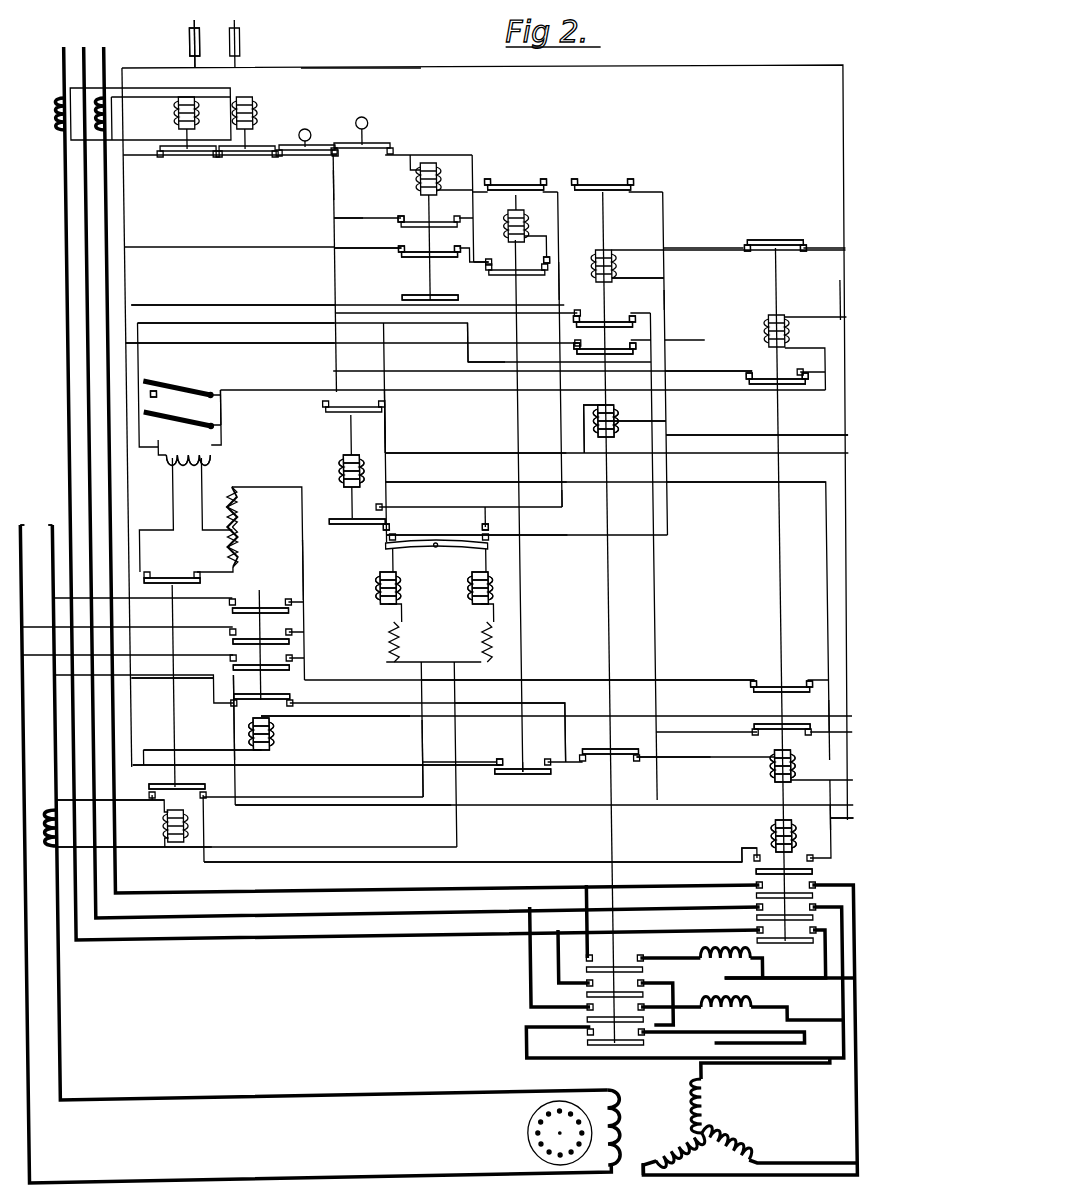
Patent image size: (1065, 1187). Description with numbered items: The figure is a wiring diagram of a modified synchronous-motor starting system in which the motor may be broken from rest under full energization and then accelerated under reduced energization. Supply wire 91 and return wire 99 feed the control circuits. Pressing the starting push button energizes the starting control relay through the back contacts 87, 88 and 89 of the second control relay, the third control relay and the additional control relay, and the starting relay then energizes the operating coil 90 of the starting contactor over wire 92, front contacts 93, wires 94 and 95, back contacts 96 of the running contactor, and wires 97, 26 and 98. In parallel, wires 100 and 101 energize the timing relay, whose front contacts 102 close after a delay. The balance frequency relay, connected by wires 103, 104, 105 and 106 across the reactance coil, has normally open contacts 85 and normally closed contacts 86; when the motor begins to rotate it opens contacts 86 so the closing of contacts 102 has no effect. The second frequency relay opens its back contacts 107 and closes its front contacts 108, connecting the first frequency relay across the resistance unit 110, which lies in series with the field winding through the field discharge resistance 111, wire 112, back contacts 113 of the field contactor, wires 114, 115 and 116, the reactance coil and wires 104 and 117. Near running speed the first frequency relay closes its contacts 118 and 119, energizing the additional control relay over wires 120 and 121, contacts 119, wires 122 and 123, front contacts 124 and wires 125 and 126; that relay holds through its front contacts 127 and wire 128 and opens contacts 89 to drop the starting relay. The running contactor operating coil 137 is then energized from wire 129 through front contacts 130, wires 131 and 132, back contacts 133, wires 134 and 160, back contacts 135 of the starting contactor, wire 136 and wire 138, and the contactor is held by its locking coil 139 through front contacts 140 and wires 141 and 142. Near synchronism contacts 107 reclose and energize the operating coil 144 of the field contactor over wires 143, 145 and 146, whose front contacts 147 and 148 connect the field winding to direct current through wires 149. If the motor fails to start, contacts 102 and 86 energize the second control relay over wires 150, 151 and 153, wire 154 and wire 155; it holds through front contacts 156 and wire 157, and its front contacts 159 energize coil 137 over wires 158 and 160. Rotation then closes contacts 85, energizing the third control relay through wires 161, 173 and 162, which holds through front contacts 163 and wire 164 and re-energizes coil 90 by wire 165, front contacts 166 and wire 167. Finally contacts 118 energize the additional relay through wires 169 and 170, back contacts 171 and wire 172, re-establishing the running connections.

The wire 26 is at (578, 425).
The contacts of balance frequency relay 85 is at (483, 528).
The contacts of balance frequency relay 86 is at (400, 530).
The back contacts of control relay CR2' 87 is at (514, 186).
The back contacts of control relay CR3' 88 is at (598, 185).
The back contacts of control relay CR4 89 is at (770, 241).
The operating coil of starting contactor 90 is at (608, 420).
The wire 91 is at (164, 68).
The wire 92 is at (209, 247).
The front contacts of relay CR1' 93 is at (420, 262).
The wire 94 is at (468, 355).
The wire 95 is at (660, 418).
The back contacts of running contactor 96 is at (755, 733).
The wire 97 is at (712, 482).
The wire 98 is at (737, 433).
The wire 99 is at (328, 68).
The wire 100 is at (436, 482).
The wire 101 is at (446, 455).
The front contacts of timing relay 102 is at (333, 500).
The wire 103 is at (412, 743).
The wire 104 is at (134, 803).
The wire 105 is at (134, 848).
The wire 106 is at (324, 822).
The back contacts of relay FR2' 107 is at (177, 778).
The front contacts of relay FR2' 108 is at (172, 567).
The resistance unit 110 is at (236, 530).
The field discharge resistance 111 is at (235, 503).
The wire 112 is at (295, 557).
The back contacts of field contactor 113 is at (290, 675).
The wire 114 is at (150, 680).
The wire 115 is at (13, 975).
The wire 116 is at (252, 1093).
The wire 117 is at (215, 716).
The contacts of frequency relay FR1' 118 is at (150, 450).
The contacts of frequency relay FR1' 119 is at (148, 394).
The wire 120 is at (826, 290).
The wire 121 is at (470, 392).
The wire 122 is at (263, 345).
The wire 123 is at (474, 246).
The front contacts of relay CR1' 124 is at (407, 216).
The wire 125 is at (349, 209).
The wire 126 is at (331, 187).
The front contacts of relay CR4 127 is at (762, 373).
The wire 128 is at (683, 371).
The wire 129 is at (557, 672).
The front contacts of relay CR4 130 is at (788, 675).
The wire 131 is at (830, 752).
The wire 132 is at (634, 805).
The back contacts of field contactor 133 is at (282, 705).
The wire 134 is at (555, 708).
The back contacts of starting contactor 135 is at (612, 758).
The wire 136 is at (672, 760).
The operating coil of running contactor 137 is at (762, 770).
The wire 138 is at (832, 780).
The locking coil of running contactor 139 is at (782, 850).
The front contacts of running contactor 140 is at (805, 870).
The wire 141 is at (738, 852).
The wire 142 is at (822, 824).
The wire 143 is at (322, 716).
The operating coil of field contactor 144 is at (262, 736).
The wire 145 is at (148, 750).
The wire 146 is at (489, 862).
The front contacts of field contactor 147 is at (296, 636).
The front contacts of field contactor 148 is at (296, 603).
The wires 149 is at (22, 548).
The wire 150 is at (383, 428).
The wire 151 is at (350, 528).
The wire 153 is at (538, 505).
The wire 154 is at (687, 248).
The wire 155 is at (812, 247).
The front contacts of relay CR2' 156 is at (537, 253).
The wire 157 is at (358, 270).
The wire 158 is at (368, 768).
The front contacts of relay CR2' 159 is at (508, 752).
The wire 160 is at (556, 764).
The wire 161 is at (660, 290).
The wire 162 is at (422, 510).
The front contacts of relay CR3' 163 is at (604, 312).
The wire 164 is at (503, 314).
The wire 165 is at (270, 350).
The front contacts of relay CR3' 166 is at (613, 343).
The wire 167 is at (660, 344).
The wire 169 is at (222, 412).
The wire 170 is at (243, 305).
The back contacts of relay CR1' 171 is at (440, 297).
The wire 172 is at (572, 302).
The wire 173 is at (666, 301).